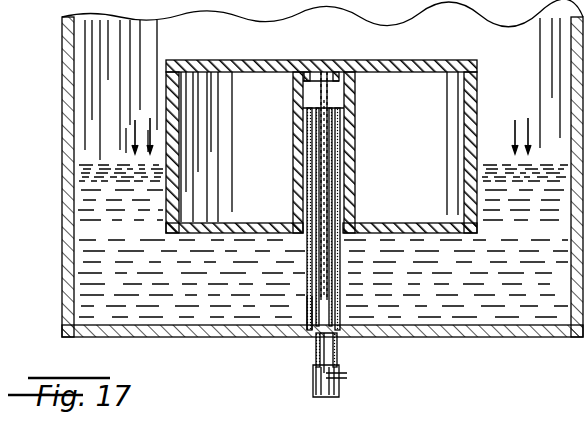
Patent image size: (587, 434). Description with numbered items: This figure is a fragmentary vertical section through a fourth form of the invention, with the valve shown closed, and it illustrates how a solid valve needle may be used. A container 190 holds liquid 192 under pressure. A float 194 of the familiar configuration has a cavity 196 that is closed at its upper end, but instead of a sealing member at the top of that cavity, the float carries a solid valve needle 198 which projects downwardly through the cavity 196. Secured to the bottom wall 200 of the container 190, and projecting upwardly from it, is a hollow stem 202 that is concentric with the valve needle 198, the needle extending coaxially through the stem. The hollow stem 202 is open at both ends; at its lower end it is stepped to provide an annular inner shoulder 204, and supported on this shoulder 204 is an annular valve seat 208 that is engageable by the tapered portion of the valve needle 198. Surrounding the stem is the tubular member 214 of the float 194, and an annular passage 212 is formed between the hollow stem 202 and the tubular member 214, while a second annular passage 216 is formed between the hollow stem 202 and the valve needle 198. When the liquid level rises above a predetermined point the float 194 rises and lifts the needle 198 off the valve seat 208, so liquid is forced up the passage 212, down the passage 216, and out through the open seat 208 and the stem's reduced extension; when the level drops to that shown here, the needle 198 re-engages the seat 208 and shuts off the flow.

The container 190 is at (63, 253).
The liquid 192 is at (80, 184).
The float 194 is at (478, 80).
The cavity 196 is at (343, 74).
The solid valve needle 198 is at (318, 98).
The bottom wall 200 is at (437, 338).
The hollow stem 202 is at (309, 298).
The annular inner shoulder 204 is at (339, 378).
The annular valve seat 208 is at (341, 331).
The annular passage 212 is at (341, 164).
The tubular member 214 is at (356, 115).
The annular passage 216 is at (332, 191).